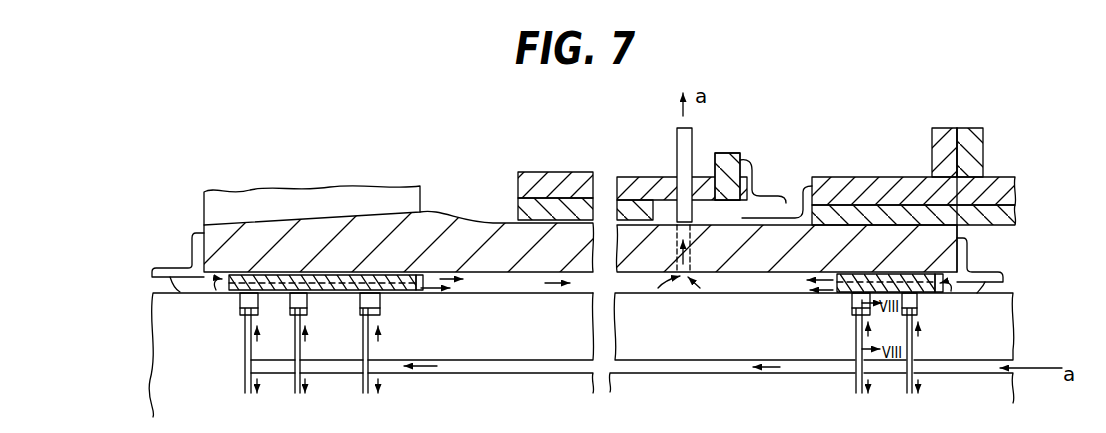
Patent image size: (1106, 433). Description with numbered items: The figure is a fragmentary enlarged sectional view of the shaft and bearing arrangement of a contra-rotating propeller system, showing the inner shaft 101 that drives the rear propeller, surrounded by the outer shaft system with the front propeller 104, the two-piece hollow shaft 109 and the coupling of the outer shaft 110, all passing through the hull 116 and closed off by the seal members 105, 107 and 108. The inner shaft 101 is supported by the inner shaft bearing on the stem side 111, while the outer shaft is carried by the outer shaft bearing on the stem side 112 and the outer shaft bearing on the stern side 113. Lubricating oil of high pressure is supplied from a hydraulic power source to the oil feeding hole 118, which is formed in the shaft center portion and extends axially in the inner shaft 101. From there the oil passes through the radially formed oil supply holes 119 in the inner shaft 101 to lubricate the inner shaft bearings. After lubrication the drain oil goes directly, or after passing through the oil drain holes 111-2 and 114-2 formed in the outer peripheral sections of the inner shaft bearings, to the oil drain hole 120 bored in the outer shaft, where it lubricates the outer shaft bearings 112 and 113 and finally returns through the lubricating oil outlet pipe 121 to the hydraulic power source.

The inner shaft 101 is at (993, 338).
The front propeller 104 is at (318, 185).
The seal member 105 is at (170, 267).
The seal member 107 is at (759, 192).
The seal member 108 is at (983, 275).
The two-piece hollow shaft 109 is at (983, 160).
The coupling of the outer shaft 110 is at (862, 177).
The inner shaft bearing on the stem side 111 is at (930, 286).
The oil drain hole 111-2 is at (878, 273).
The outer shaft bearing on the stem side 112 is at (433, 211).
The outer shaft bearing on the stern side 113 is at (518, 210).
The oil drain hole 114-2 is at (433, 284).
The hull 116 is at (546, 172).
The oil feeding hole 118 is at (430, 375).
The oil supply hole 119 is at (375, 348).
The oil drain hole 120 is at (672, 262).
The lubricating oil outlet pipe 121 is at (694, 152).